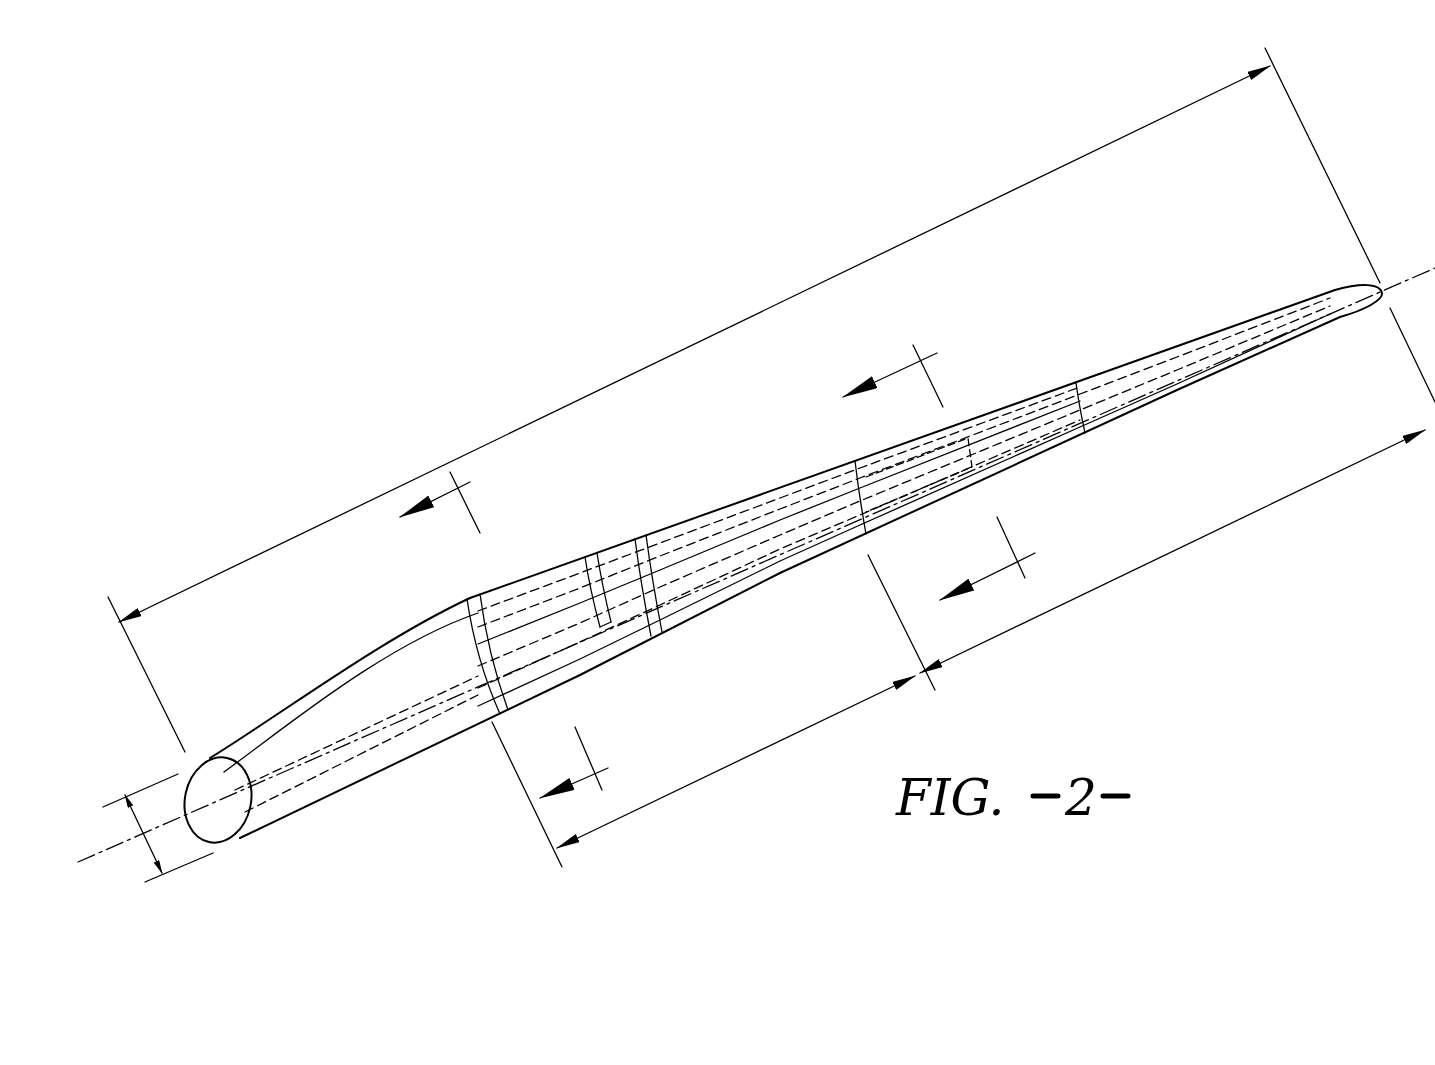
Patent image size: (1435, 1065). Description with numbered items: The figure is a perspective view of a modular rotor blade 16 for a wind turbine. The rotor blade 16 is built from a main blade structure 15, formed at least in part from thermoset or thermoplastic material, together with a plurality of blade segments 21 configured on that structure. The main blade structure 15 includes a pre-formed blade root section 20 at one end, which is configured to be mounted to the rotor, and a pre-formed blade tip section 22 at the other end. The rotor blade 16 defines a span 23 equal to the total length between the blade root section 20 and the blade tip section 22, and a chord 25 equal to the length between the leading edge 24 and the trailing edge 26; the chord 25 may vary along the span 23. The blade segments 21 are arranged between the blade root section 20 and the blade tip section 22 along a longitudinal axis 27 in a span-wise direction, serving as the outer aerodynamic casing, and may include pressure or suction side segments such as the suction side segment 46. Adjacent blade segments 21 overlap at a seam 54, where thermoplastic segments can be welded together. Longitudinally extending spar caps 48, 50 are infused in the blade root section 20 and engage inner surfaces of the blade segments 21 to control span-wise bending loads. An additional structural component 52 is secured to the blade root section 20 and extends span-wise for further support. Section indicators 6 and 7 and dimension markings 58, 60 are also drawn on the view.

The rotor blade 16 is at (400, 356).
The blade root section 20 is at (225, 740).
The blade segment 21 is at (483, 583).
The blade tip section 22 is at (1240, 363).
The span 23 is at (712, 333).
The leading edge 24 is at (743, 593).
The chord 25 is at (172, 827).
The trailing edge 26 is at (538, 583).
The longitudinal axis 27 is at (193, 877).
The suction side segment 46 is at (1027, 412).
The spar cap 48 is at (180, 797).
The spar cap 50 is at (303, 777).
The structural component 52 is at (695, 542).
The seam 54 is at (587, 563).
The segment length 58 is at (708, 775).
The segment length 60 is at (1160, 565).
The main blade structure 15 is at (363, 743).
The section line 6 is at (504, 635).
The section line 7 is at (934, 494).